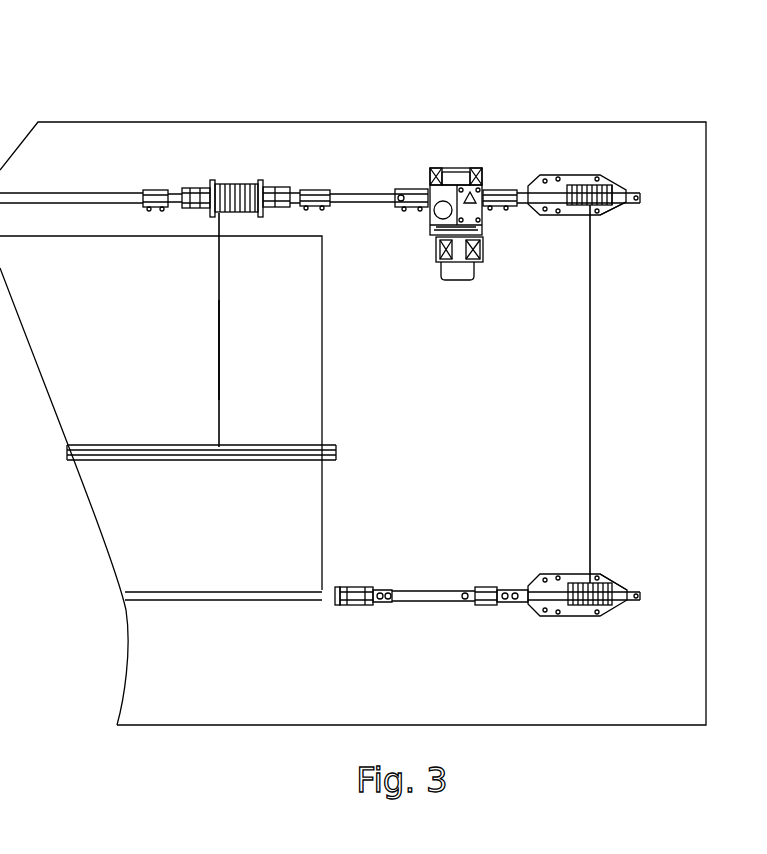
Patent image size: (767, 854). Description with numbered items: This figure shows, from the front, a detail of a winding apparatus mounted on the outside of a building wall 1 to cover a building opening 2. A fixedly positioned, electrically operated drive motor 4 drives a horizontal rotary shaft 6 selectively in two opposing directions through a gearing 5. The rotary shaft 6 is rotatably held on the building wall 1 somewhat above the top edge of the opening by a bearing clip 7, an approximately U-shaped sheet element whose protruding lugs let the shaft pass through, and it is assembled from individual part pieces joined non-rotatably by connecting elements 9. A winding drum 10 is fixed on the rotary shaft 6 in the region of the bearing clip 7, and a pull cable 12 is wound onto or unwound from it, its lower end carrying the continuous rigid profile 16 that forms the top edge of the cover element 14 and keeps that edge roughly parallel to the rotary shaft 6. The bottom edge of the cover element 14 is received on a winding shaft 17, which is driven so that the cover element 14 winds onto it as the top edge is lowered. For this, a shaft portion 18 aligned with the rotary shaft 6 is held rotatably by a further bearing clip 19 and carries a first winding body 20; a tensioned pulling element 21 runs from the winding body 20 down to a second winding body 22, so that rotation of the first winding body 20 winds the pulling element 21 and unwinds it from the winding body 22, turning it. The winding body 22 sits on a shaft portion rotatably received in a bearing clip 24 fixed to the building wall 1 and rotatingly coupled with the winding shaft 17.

The building wall 1 is at (343, 165).
The building opening 2 is at (240, 352).
The drive motor 4 is at (464, 282).
The gearing 5 is at (488, 183).
The rotary shaft 6 is at (113, 192).
The bearing clip 7 is at (197, 190).
The connecting element 9 is at (153, 187).
The winding drum 10 is at (253, 172).
The pull cable 12 is at (219, 265).
The cover element 14 is at (235, 537).
The rigid profile 16 is at (327, 440).
The winding shaft 17 is at (328, 604).
The shaft portion 18 is at (560, 178).
The bearing clip 19 is at (617, 213).
The first winding body 20 is at (611, 177).
The pulling element 21 is at (590, 357).
The second winding body 22 is at (581, 613).
The bearing clip 24 is at (623, 578).